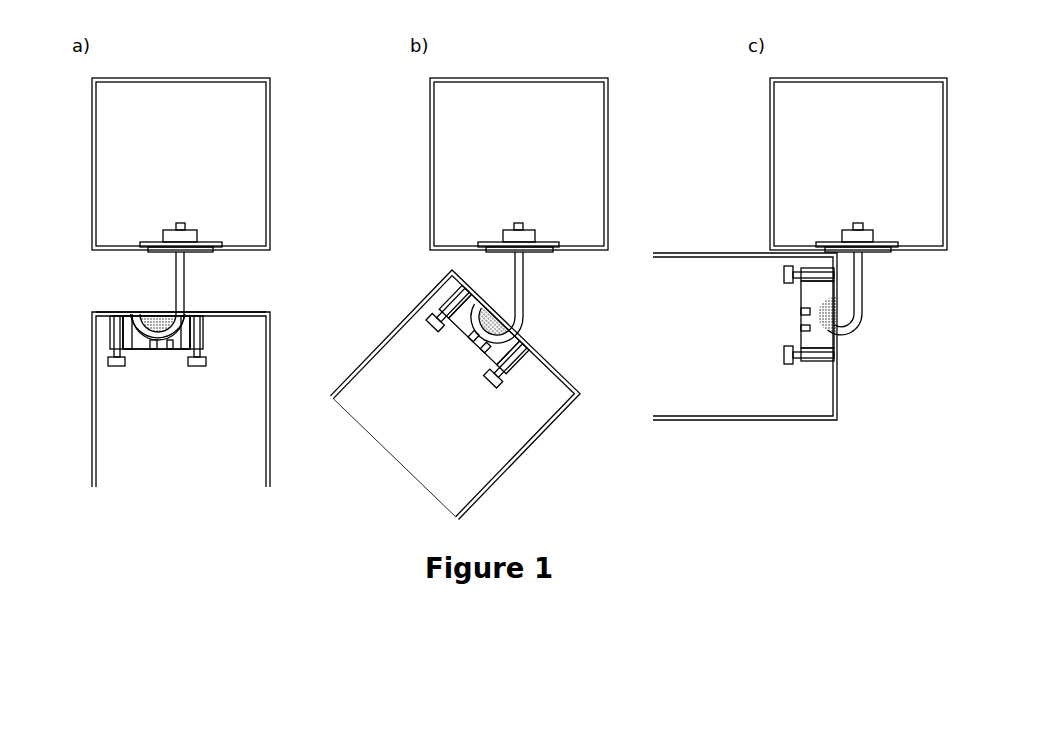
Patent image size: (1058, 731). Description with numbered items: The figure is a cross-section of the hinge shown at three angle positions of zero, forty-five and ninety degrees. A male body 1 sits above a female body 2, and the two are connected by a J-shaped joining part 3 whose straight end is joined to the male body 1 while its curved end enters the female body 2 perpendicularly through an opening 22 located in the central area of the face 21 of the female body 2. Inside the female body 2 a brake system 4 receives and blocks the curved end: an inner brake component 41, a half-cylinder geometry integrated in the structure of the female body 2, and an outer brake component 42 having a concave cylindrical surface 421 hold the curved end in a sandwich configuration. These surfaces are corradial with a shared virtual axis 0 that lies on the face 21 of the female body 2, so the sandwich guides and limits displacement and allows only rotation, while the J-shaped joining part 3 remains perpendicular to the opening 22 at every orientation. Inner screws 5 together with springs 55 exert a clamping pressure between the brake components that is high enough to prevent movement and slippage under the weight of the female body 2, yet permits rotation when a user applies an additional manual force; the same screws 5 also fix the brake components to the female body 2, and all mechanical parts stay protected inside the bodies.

The male body 1 is at (272, 177).
The female body 2 is at (90, 458).
The J-shaped joining part 3 is at (187, 281).
The face 21 is at (236, 309).
The opening 22 is at (186, 312).
The virtual axis 0 is at (155, 311).
The brake system 4 is at (178, 342).
The inner brake component 41 is at (142, 316).
The outer brake component 42 is at (131, 338).
The concave cylindrical surface 421 is at (158, 351).
The inner screws 5 is at (193, 368).
The springs 55 is at (182, 355).